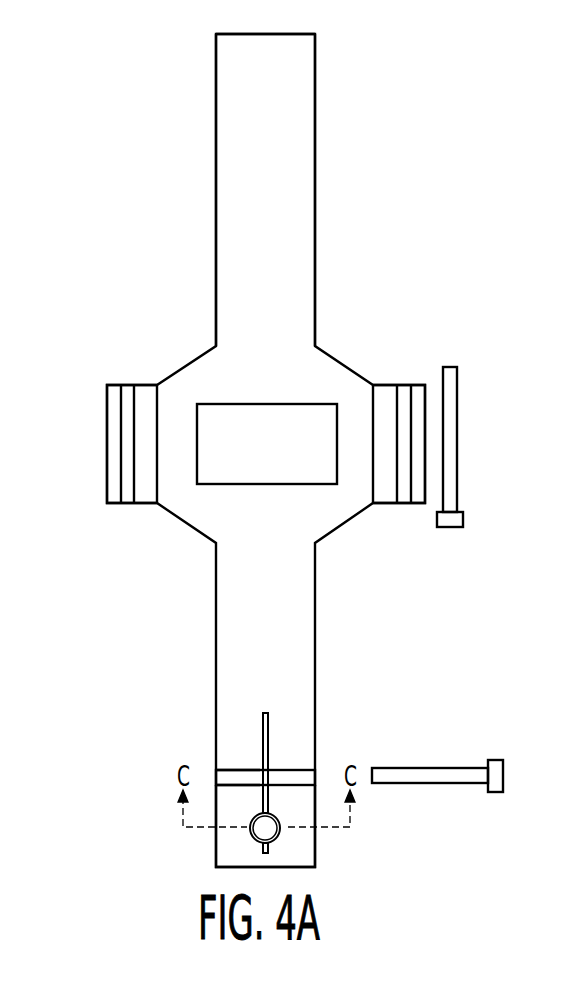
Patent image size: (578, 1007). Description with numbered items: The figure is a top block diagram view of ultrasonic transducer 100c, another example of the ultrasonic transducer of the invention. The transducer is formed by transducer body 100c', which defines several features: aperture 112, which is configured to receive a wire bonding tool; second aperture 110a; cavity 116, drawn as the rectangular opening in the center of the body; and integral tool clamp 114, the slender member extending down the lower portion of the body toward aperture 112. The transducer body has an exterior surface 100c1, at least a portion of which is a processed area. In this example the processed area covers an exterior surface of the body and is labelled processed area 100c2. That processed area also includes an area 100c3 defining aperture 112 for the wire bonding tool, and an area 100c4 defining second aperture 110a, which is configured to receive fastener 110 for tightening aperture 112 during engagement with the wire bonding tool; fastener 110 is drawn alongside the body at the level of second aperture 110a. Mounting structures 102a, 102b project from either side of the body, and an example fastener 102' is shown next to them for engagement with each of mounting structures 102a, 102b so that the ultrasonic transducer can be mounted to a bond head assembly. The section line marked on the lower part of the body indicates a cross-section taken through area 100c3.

The ultrasonic transducer 100c is at (303, 450).
The surface 100c1 is at (300, 283).
The processed area 100c2 is at (237, 80).
The transducer body 100c' is at (360, 77).
The area defining aperture 100c3 is at (283, 846).
The area defining second aperture 100c4 is at (300, 770).
The second aperture 110a is at (237, 770).
The cavity 116 is at (215, 403).
The mounting structure 102a is at (107, 438).
The mounting structure 102b is at (417, 503).
The fastener 102' is at (495, 433).
The fastener 110 is at (463, 783).
The integral tool clamp 114 is at (267, 733).
The aperture 112 is at (255, 837).